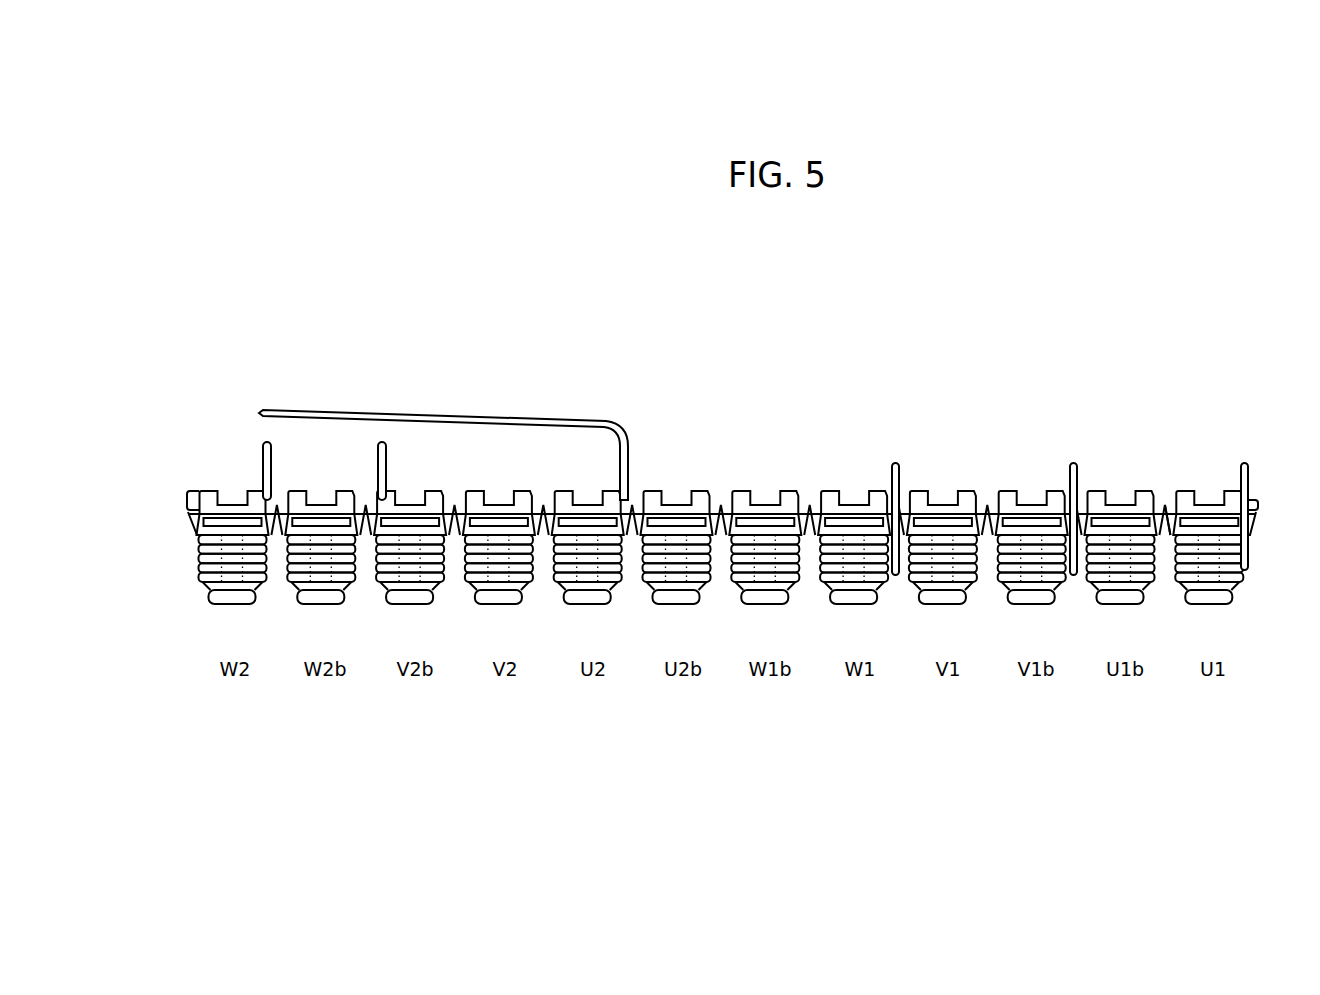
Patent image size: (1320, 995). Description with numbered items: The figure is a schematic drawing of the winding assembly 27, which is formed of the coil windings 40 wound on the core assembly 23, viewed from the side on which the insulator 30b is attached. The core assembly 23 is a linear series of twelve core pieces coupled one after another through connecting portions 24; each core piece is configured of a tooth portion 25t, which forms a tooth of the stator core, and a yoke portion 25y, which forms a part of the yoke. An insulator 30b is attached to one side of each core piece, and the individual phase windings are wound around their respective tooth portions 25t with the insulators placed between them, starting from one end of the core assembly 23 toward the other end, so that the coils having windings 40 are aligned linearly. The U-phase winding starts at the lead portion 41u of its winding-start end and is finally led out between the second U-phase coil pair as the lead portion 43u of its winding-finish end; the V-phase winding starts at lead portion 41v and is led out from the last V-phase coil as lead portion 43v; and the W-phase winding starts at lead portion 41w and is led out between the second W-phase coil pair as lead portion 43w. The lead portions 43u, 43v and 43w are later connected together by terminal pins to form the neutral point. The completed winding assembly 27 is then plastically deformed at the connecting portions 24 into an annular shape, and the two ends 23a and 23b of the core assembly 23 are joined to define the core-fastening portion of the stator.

The core assembly 23 is at (212, 600).
The end of core assembly 23a is at (1254, 505).
The end of core assembly 23b is at (190, 497).
The connecting portion 24 is at (1175, 505).
The yoke portion 25y is at (1173, 533).
The tooth portion 25t is at (1225, 602).
The winding assembly 27 is at (726, 465).
The insulator 30b is at (228, 500).
The coil winding 40 is at (202, 552).
The lead portion of winding-start end 41w is at (893, 462).
The lead portion of winding-start end 41v is at (1071, 462).
The lead portion of winding-start end 41u is at (1242, 462).
The lead portion of winding-finish end 43w is at (271, 462).
The lead portion of winding-finish end 43v is at (386, 462).
The lead portion of winding-finish end 43u is at (629, 462).